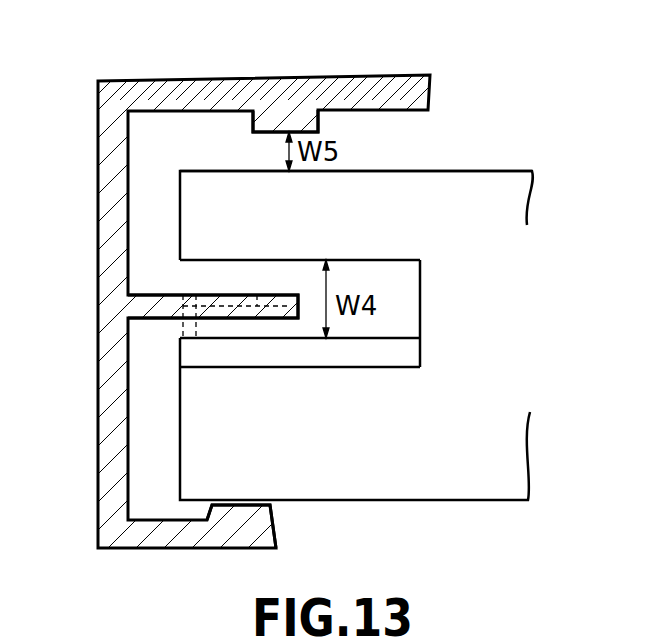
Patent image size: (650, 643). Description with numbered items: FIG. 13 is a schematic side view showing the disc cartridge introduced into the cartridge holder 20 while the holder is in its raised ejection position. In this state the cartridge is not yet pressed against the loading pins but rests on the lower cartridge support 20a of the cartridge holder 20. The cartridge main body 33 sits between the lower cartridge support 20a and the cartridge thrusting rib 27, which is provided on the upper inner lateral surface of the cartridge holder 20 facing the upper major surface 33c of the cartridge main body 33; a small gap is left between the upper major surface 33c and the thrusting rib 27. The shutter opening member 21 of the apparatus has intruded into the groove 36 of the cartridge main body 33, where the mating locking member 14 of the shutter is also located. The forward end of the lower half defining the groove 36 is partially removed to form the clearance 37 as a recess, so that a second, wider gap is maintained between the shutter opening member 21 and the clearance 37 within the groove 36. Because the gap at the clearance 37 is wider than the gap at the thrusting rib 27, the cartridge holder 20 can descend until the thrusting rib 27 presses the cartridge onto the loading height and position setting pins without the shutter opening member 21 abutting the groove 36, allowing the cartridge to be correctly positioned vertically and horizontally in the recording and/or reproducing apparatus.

The cartridge holder 20 is at (123, 92).
The cartridge thrusting rib 27 is at (318, 124).
The lower cartridge support 20a is at (270, 505).
The mating locking member 14 is at (205, 296).
The shutter opening member 21 is at (183, 318).
The cartridge main body 33 is at (507, 171).
The upper major surface 33c is at (418, 171).
The groove 36 is at (400, 259).
The clearance 37 is at (372, 362).